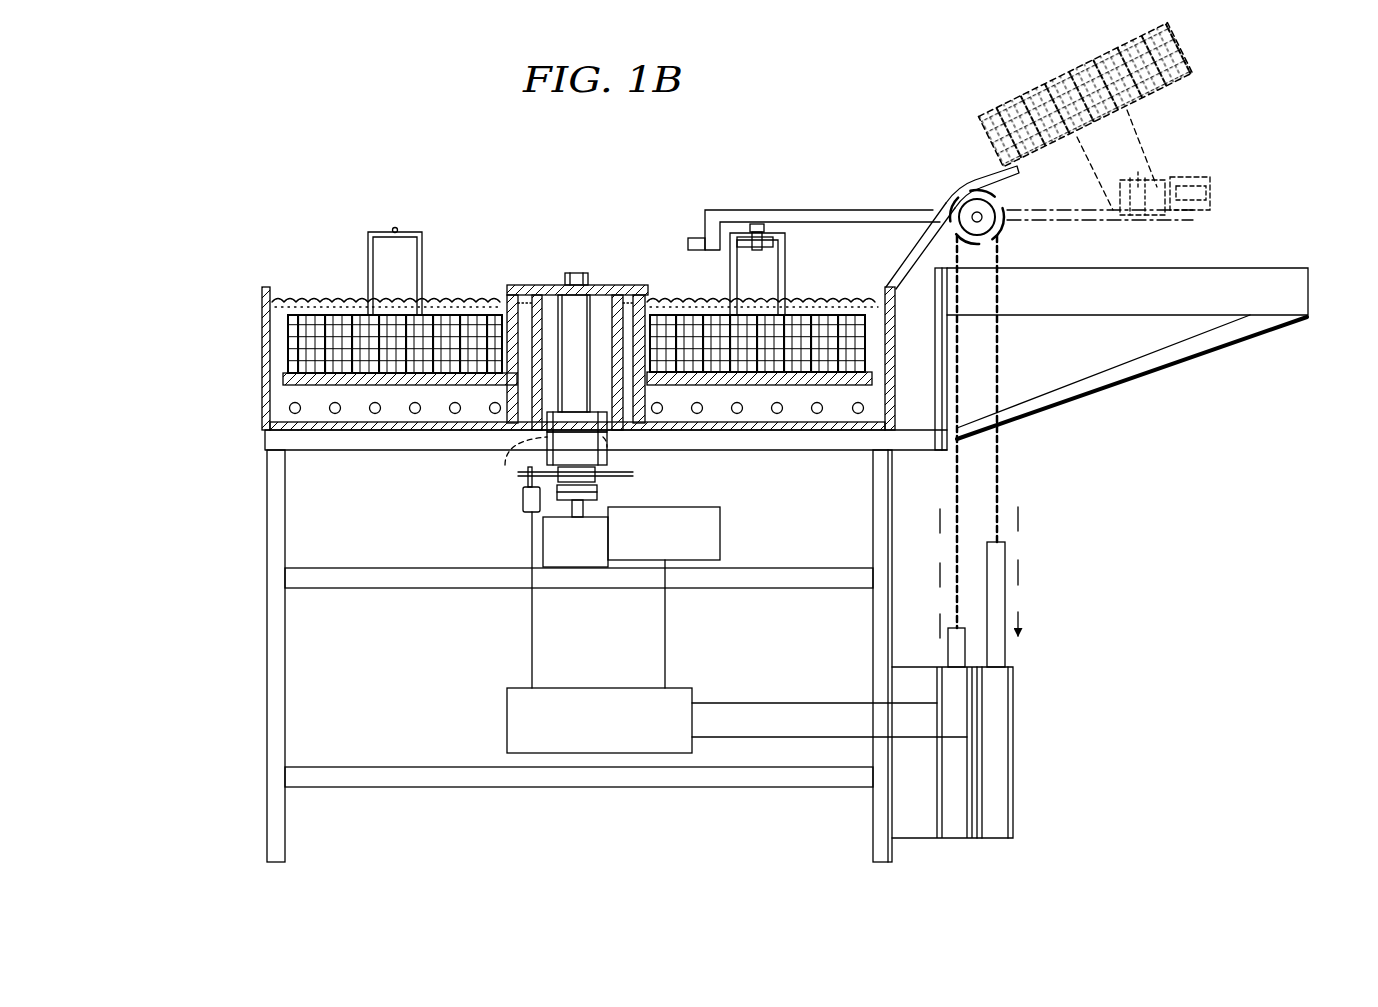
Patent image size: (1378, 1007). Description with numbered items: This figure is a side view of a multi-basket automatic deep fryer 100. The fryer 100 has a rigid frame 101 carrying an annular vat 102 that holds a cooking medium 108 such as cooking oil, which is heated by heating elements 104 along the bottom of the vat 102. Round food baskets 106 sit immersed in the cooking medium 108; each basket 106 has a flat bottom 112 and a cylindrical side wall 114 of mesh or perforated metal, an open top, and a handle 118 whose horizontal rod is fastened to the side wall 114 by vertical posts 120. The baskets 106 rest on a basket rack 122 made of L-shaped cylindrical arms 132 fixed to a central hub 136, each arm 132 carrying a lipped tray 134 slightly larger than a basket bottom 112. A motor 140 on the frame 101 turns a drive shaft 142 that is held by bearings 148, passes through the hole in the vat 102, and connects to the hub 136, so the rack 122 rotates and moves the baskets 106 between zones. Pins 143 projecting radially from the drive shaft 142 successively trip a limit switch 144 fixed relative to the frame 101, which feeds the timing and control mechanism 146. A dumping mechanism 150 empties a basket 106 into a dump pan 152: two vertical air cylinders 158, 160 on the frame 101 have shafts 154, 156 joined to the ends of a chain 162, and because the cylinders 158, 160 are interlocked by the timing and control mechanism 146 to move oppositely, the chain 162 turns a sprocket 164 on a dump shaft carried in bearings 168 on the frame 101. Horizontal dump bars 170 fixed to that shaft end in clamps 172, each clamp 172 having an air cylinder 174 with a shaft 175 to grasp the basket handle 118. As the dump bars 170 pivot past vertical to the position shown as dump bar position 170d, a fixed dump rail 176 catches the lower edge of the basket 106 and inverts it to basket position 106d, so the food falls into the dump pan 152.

The multi-basket automatic deep fryer 100 is at (326, 100).
The rigid frame 101 is at (266, 648).
The vat 102 is at (254, 394).
The heating elements 104 is at (336, 414).
The food basket 106 is at (317, 302).
The basket position 106d is at (1194, 62).
The cooking medium 108 is at (838, 406).
The flat bottom 112 is at (444, 360).
The cylindrical side wall 114 is at (287, 332).
The basket handle 118 is at (393, 228).
The vertical posts 120 is at (367, 245).
The basket rack 122 is at (550, 278).
The arm 132 is at (512, 286).
The lipped tray 134 is at (286, 378).
The central hub 136 is at (620, 287).
The motor 140 is at (596, 557).
The drive shaft 142 is at (521, 446).
The pins 143 is at (523, 474).
The limit switch 144 is at (522, 505).
The timing and control mechanism 146 is at (618, 737).
The bearings 148 is at (610, 423).
The dumping mechanism 150 is at (1205, 150).
The dump pan 152 is at (1310, 278).
The shaft 154 is at (947, 653).
The shaft 156 is at (1005, 656).
The air cylinder 158 is at (945, 770).
The air cylinder 160 is at (1000, 770).
The chain 162 is at (998, 463).
The sprocket 164 is at (1003, 198).
The bearings 168 is at (1003, 228).
The dump bar 170 is at (822, 210).
The dump bar position 170d is at (1165, 222).
The clamp 172 is at (792, 231).
The air cylinder 174 is at (693, 235).
The shaft 175 is at (741, 247).
The dump rail 176 is at (950, 186).